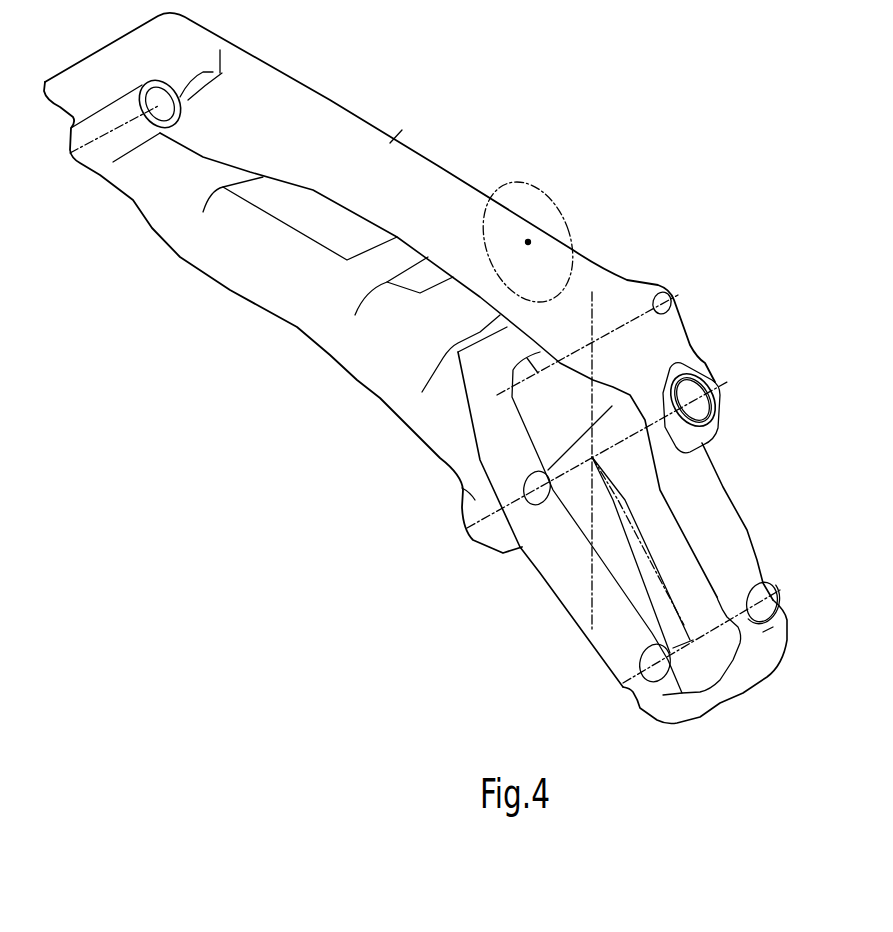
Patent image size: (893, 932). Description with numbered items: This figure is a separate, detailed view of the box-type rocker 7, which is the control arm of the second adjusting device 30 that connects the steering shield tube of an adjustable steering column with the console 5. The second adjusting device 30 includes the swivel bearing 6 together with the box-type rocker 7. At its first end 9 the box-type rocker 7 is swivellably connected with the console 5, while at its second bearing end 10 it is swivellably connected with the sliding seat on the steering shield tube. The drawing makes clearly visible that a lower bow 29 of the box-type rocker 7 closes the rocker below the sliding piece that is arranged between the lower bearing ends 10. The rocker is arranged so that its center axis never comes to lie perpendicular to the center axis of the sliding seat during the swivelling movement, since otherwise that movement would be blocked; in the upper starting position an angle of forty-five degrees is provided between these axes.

The console 5 is at (390, 148).
The swivel bearing 6 is at (160, 92).
The box-type rocker 7 is at (712, 487).
The first end 9 is at (711, 399).
The second bearing end 10 is at (787, 607).
The lower bow 29 is at (720, 703).
The second adjusting device 30 is at (378, 552).